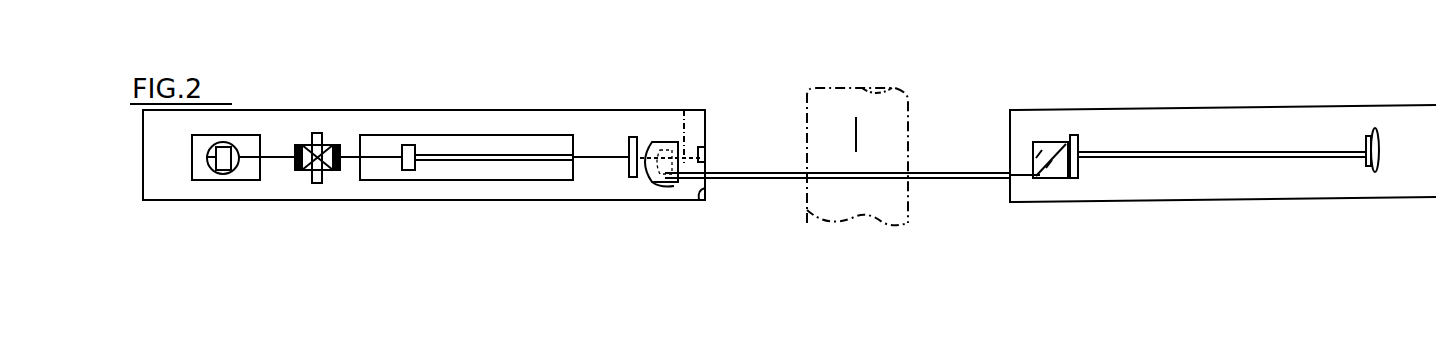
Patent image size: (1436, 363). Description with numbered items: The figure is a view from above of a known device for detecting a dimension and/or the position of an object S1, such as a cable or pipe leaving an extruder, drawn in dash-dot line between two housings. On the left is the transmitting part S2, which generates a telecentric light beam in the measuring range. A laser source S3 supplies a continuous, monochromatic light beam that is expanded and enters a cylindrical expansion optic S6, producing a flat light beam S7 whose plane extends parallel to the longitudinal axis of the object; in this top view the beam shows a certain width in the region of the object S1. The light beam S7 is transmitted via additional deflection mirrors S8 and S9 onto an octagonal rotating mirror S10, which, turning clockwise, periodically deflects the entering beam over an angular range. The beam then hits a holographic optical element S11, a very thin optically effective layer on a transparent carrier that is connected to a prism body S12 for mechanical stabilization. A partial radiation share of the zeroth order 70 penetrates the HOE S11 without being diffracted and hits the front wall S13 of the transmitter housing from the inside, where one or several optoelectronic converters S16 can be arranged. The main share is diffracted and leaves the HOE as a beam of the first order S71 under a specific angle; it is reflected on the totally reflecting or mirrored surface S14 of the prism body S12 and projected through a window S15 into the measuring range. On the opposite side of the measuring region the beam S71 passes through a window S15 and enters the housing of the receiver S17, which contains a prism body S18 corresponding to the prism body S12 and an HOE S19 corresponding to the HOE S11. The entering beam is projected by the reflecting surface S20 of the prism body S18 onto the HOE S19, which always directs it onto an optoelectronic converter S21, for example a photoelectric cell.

The object S1 is at (905, 118).
The transmitting part S2 is at (378, 108).
The laser source S3 is at (462, 148).
The cylindrical expansion optic S6 is at (192, 152).
The light beam S7 is at (505, 156).
The deflection mirror S8 is at (215, 165).
The deflection mirror S9 is at (415, 145).
The octagonal rotating mirror S10 is at (300, 143).
The holographic optical element S11 is at (629, 142).
The prism body S12 is at (662, 150).
The front wall S13 is at (700, 192).
The reflecting surface S14 is at (658, 178).
The window S15 is at (706, 173).
The optoelectronic converter S16 is at (706, 158).
The receiver S17 is at (1232, 102).
The prism body S18 is at (1050, 145).
The holographic optical element S19 is at (1078, 142).
The reflecting surface S20 is at (1052, 180).
The optoelectronic converter S21 is at (1366, 142).
The beam of the first order S71 is at (760, 180).
The partial radiation share of the zeroth order 70 is at (690, 124).